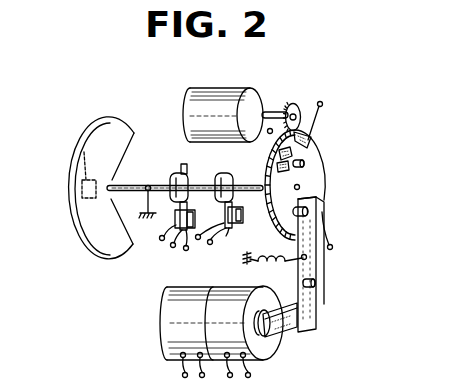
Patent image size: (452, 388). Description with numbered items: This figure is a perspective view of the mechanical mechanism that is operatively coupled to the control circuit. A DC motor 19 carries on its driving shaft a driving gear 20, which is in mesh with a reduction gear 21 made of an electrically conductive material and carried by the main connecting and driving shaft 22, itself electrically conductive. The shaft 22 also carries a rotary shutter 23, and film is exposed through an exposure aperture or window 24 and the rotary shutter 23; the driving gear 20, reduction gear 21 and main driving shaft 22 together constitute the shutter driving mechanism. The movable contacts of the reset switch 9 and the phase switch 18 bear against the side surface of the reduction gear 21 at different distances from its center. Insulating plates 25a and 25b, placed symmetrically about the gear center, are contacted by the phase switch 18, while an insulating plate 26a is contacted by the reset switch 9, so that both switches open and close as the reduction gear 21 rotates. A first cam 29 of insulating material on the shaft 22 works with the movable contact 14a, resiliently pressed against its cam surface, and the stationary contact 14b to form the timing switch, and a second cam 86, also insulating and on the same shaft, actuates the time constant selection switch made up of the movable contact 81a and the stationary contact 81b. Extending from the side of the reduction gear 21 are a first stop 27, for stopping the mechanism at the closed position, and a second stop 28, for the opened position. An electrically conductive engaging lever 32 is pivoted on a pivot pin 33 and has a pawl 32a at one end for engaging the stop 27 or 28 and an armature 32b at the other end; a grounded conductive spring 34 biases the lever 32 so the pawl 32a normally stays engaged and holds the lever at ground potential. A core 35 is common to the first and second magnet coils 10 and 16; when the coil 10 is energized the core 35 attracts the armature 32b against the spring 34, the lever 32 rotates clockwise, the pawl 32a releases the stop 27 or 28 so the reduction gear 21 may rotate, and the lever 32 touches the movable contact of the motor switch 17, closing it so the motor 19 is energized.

The reset switch 9 is at (270, 128).
The first magnet coil 10 is at (227, 237).
The movable contact 14a is at (250, 167).
The stationary contact 14b is at (243, 216).
The second magnet coil 16 is at (178, 311).
The motor switch 17 is at (333, 246).
The phase switch 18 is at (321, 101).
The DC motor 19 is at (185, 98).
The driving gear 20 is at (294, 104).
The reduction gear 21 is at (327, 160).
The main connecting and driving shaft 22 is at (151, 186).
The rotary shutter 23 is at (102, 239).
The exposure aperture 24 is at (78, 149).
The insulating plate 25a is at (310, 139).
The insulating plate 25b is at (286, 180).
The insulating plate 26a is at (306, 164).
The first stop 27 is at (309, 211).
The second stop 28 is at (313, 147).
The first cam 29 is at (185, 176).
The engaging lever 32 is at (315, 261).
The pawl 32a is at (321, 201).
The armature 32b is at (289, 327).
The pivot pin 33 is at (316, 283).
The spring 34 is at (262, 267).
The core 35 is at (271, 340).
The movable contact 81a is at (182, 172).
The stationary contact 81b is at (196, 222).
The second cam 86 is at (181, 168).